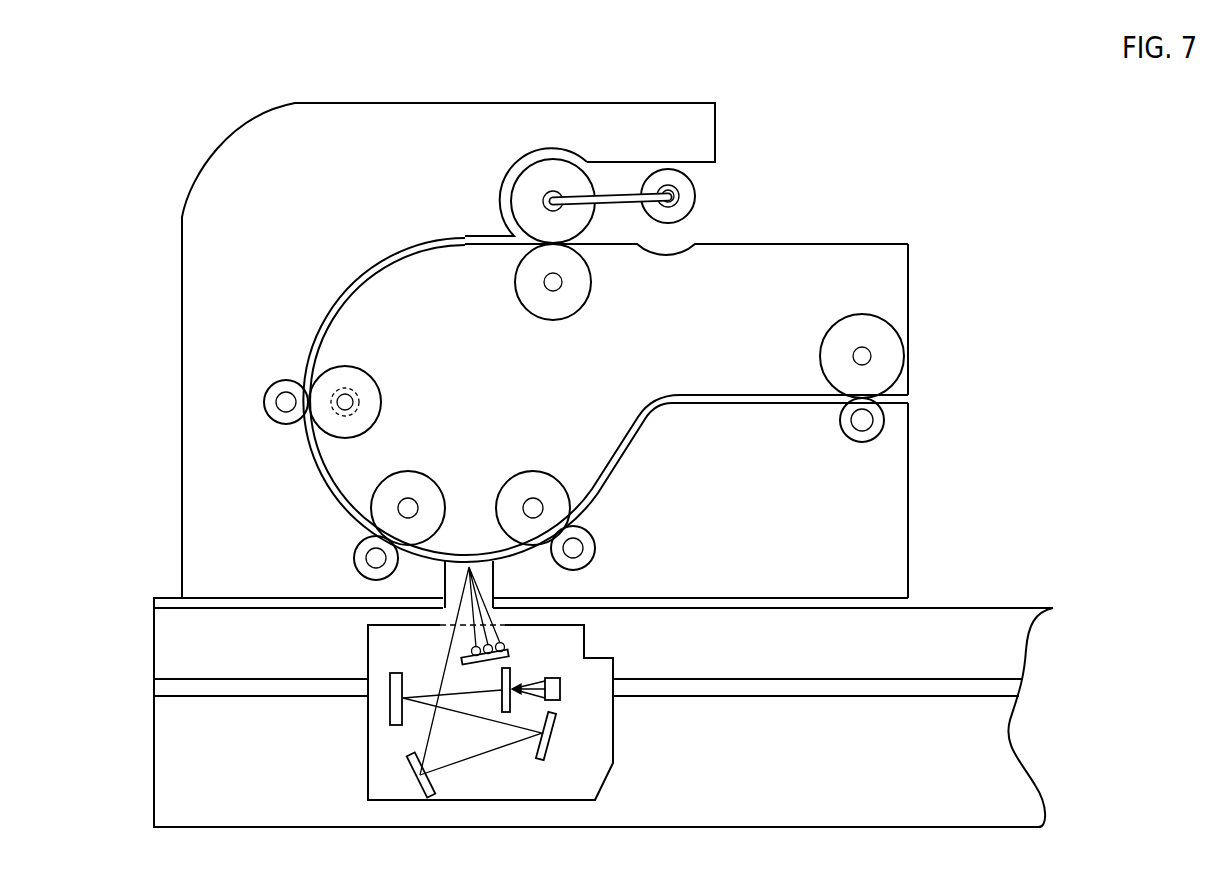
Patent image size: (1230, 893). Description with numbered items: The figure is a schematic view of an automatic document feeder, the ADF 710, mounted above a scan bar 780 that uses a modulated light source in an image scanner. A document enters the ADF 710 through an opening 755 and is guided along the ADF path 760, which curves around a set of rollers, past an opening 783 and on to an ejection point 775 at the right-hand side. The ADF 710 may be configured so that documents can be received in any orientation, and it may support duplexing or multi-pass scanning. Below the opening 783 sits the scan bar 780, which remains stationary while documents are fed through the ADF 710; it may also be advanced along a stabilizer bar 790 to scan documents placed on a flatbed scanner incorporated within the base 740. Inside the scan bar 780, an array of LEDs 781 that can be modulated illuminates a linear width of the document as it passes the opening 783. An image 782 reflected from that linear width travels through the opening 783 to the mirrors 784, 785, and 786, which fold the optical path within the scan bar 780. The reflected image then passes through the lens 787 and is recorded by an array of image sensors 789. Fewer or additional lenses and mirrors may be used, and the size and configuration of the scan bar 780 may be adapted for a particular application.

The ADF 710 is at (207, 164).
The opening 755 is at (764, 206).
The ADF path 760 is at (353, 299).
The ejection point 775 is at (917, 399).
The opening 783 is at (497, 582).
The scan bar 780 is at (605, 781).
The array of LEDs 781 is at (508, 653).
The image 782 is at (475, 759).
The mirror 784 is at (418, 782).
The mirror 785 is at (548, 754).
The mirror 786 is at (395, 672).
The lens 787 is at (512, 673).
The array of image sensors 789 is at (562, 690).
The stabilizer bar 790 is at (765, 698).
The base 740 is at (1000, 829).